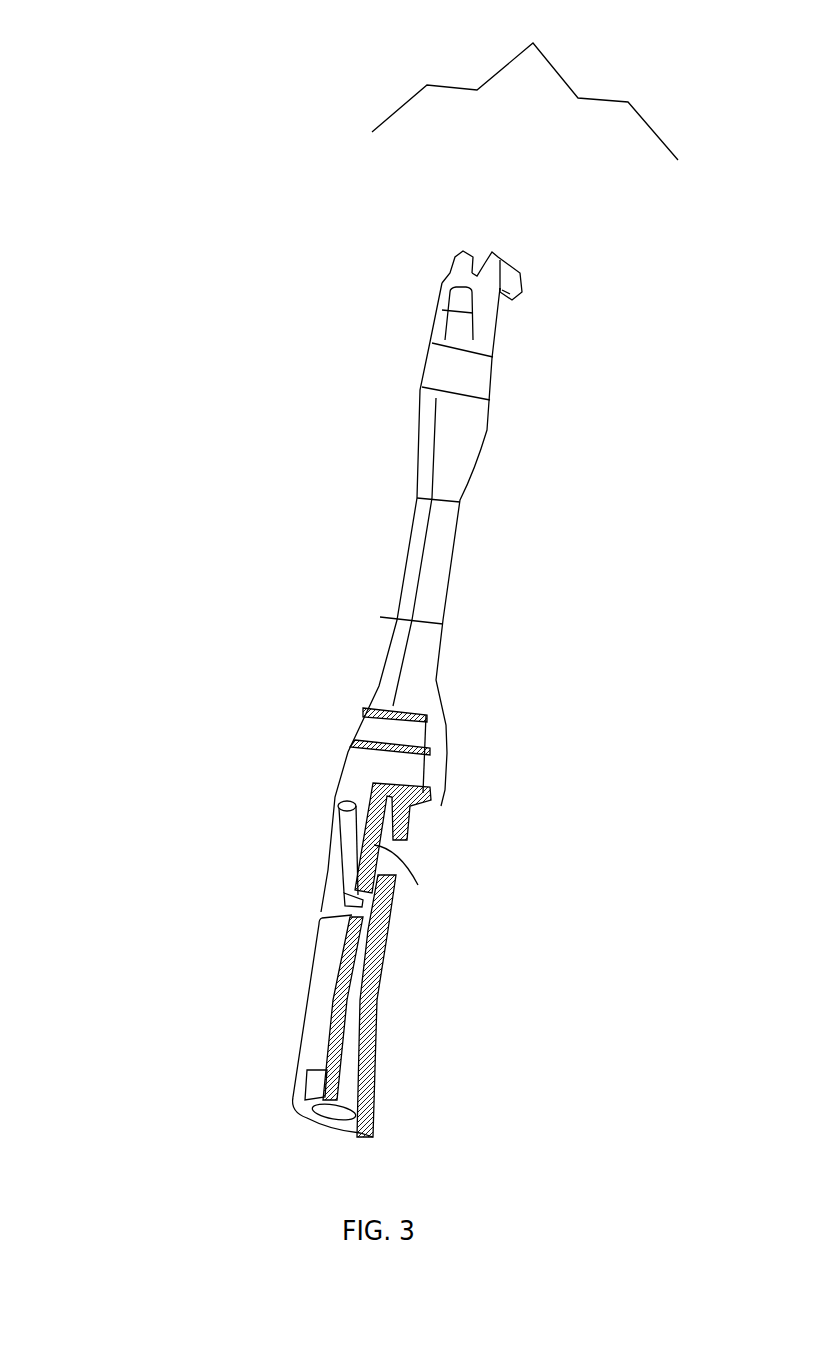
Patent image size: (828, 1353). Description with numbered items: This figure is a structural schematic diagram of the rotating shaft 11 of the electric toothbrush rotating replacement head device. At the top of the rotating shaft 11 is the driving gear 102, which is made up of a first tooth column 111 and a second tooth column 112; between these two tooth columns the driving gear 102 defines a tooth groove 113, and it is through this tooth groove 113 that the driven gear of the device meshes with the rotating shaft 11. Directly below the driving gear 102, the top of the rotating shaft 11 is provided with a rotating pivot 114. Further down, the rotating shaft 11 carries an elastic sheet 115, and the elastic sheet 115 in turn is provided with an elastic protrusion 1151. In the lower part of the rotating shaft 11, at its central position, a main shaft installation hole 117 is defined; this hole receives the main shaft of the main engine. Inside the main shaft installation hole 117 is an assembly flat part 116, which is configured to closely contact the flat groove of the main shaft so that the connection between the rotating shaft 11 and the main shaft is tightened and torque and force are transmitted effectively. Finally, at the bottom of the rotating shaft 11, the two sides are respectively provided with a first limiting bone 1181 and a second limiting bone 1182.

The driving gear 102 is at (525, 80).
The rotating shaft 11 is at (393, 620).
The first tooth column 111 is at (466, 252).
The second tooth column 112 is at (498, 258).
The tooth groove 113 is at (478, 264).
The rotating pivot 114 is at (443, 308).
The elastic sheet 115 is at (345, 868).
The elastic protrusion 1151 is at (418, 885).
The assembly flat part 116 is at (384, 984).
The main shaft installation hole 117 is at (370, 1072).
The first limiting bone 1181 is at (303, 1095).
The second limiting bone 1182 is at (376, 1120).